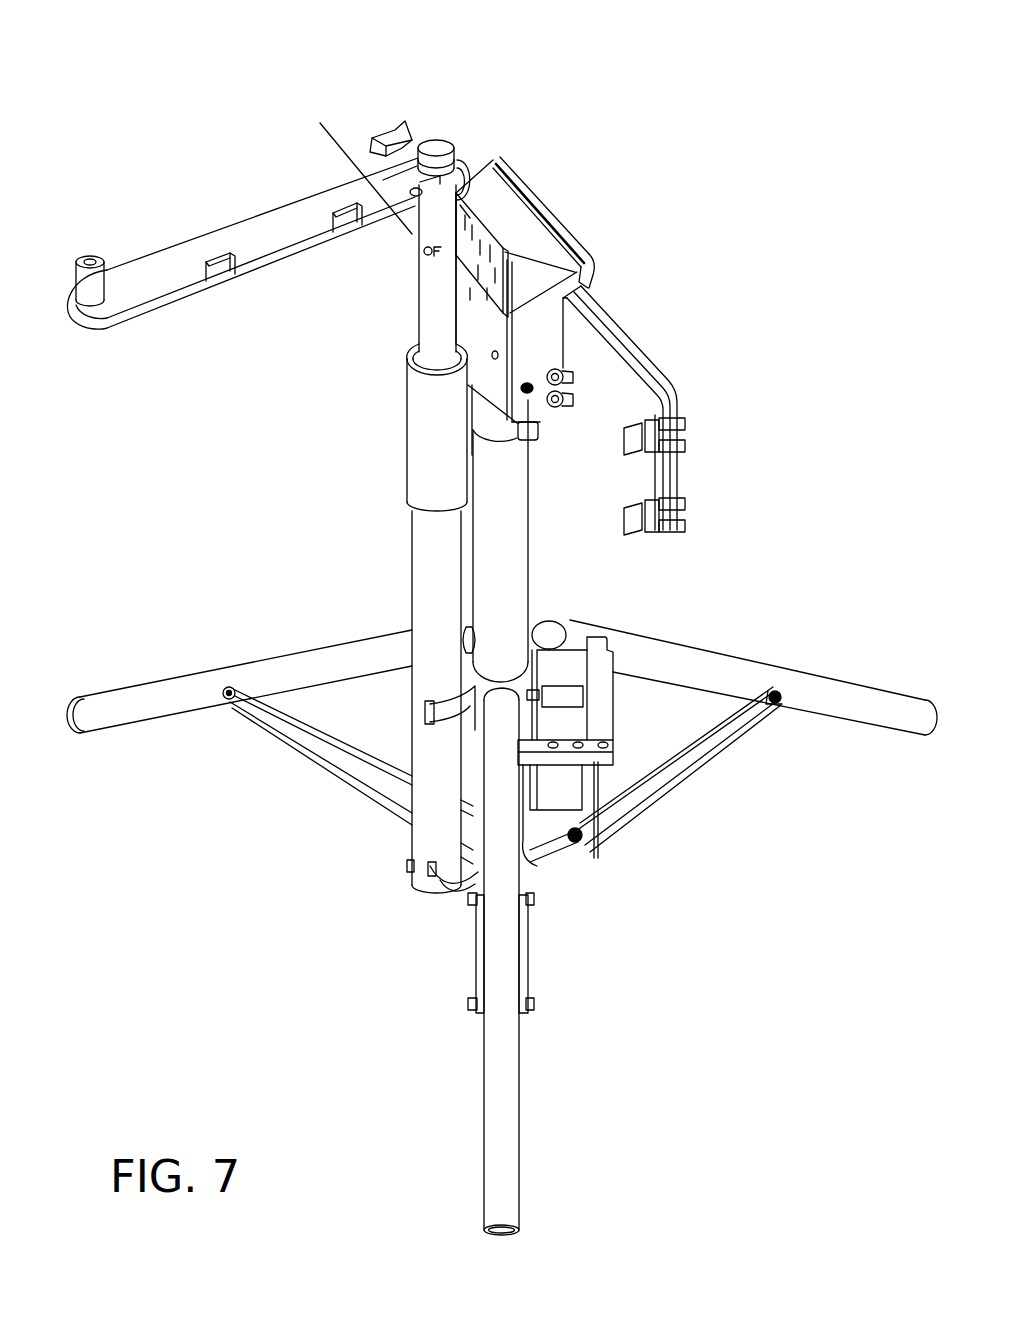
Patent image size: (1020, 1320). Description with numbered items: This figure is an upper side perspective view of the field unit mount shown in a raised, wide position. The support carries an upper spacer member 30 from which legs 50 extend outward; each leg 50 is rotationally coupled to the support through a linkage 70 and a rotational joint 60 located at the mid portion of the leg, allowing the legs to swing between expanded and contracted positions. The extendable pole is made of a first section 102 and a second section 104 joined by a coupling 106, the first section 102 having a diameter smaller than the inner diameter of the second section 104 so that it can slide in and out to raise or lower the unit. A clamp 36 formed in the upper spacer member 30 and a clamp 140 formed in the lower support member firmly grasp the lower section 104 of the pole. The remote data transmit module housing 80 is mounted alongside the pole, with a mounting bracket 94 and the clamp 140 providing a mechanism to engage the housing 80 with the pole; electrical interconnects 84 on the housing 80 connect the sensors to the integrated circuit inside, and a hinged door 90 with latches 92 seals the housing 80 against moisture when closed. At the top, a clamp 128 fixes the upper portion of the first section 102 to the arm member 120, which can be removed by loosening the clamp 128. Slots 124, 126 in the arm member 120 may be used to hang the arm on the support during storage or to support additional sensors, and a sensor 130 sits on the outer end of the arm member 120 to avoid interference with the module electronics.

The upper spacer member 30 is at (527, 688).
The clamp 36 is at (430, 718).
The leg 50 is at (127, 707).
The rotational joint 60 is at (777, 697).
The linkage 70 is at (682, 768).
The housing 80 is at (503, 158).
The electrical interconnects 84 is at (557, 372).
The hinged door 90 is at (657, 370).
The latches 92 is at (683, 431).
The mounting bracket 94 is at (470, 228).
The first section 102 is at (430, 315).
The second section 104 is at (430, 560).
The coupling 106 is at (407, 428).
The arm member 120 is at (173, 252).
The slot 124 is at (222, 273).
The slot 126 is at (358, 222).
The clamp 128 is at (382, 148).
The sensor 130 is at (90, 300).
The clamp 140 is at (442, 893).